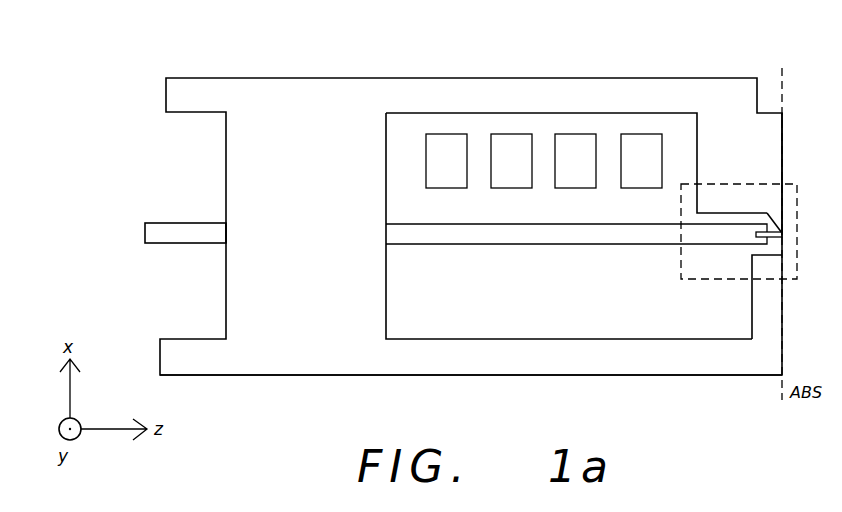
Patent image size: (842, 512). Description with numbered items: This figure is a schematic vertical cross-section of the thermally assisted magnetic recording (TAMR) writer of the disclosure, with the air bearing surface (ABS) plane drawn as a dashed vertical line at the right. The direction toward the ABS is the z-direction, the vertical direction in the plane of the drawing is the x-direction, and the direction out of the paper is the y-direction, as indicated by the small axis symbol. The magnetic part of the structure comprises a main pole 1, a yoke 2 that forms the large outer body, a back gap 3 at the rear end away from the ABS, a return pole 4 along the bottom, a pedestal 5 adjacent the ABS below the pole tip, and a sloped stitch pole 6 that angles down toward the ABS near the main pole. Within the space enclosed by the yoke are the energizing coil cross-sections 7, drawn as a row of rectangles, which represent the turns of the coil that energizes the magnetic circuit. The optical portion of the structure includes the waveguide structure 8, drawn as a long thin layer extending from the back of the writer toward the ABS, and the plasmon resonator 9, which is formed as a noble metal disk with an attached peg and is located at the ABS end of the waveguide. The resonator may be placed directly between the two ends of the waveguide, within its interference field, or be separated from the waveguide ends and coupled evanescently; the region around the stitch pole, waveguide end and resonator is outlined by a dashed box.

The main pole 1 is at (767, 153).
The yoke 2 is at (501, 93).
The back gap 3 is at (241, 162).
The return pole 4 is at (665, 362).
The pedestal 5 is at (767, 305).
The sloped stitch pole 6 is at (775, 217).
The energizing coil cross-sections 7 is at (447, 147).
The waveguide structure 8 is at (425, 236).
The plasmon resonator 9 is at (793, 240).